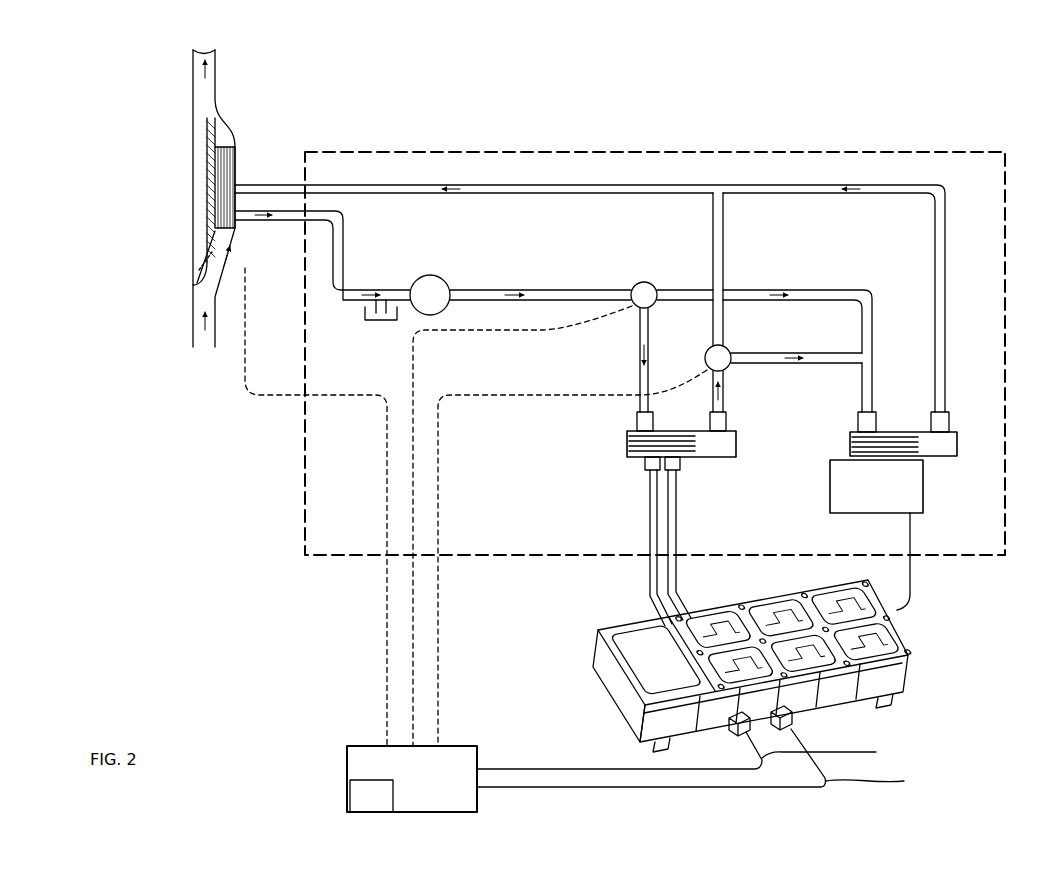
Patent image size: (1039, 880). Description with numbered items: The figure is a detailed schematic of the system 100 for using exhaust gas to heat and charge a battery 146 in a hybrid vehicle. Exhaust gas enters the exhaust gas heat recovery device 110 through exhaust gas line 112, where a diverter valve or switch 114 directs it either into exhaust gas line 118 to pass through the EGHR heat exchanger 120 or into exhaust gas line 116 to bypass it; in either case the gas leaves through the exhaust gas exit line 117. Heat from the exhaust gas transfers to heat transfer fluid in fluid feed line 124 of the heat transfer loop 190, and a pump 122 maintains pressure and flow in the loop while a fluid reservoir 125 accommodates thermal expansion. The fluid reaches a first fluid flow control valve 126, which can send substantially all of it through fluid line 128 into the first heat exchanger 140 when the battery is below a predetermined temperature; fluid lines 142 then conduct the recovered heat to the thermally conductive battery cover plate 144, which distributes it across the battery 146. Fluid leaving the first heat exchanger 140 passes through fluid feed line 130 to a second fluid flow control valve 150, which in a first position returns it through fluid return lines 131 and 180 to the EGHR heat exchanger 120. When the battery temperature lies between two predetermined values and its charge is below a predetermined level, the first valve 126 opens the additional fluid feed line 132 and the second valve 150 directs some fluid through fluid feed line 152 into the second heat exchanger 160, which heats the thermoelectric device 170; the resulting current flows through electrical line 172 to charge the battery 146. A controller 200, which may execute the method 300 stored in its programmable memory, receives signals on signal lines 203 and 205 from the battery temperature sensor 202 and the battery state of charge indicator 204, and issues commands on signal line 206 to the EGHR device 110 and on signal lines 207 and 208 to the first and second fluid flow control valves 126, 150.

The system 100 is at (720, 76).
The exhaust gas heat recovery device 110 is at (207, 214).
The exhaust gas line 112 is at (193, 344).
The diverter valve or switch 114 is at (205, 271).
The exhaust gas line 116 is at (193, 240).
The exhaust gas exit line 117 is at (193, 82).
The exhaust gas line 118 is at (232, 250).
The EGHR heat exchanger 120 is at (237, 162).
The pump 122 is at (436, 276).
The fluid feed line 124 is at (294, 222).
The fluid reservoir 125 is at (369, 320).
The first fluid flow control valve 126 is at (638, 283).
The fluid line 128 is at (640, 372).
The fluid feed line 130 is at (724, 398).
The fluid return line 131 is at (724, 233).
The fluid feed line 132 is at (781, 290).
The first heat exchanger 140 is at (610, 458).
The fluid lines 142 is at (676, 514).
The battery cover plate 144 is at (620, 673).
The battery 146 is at (758, 671).
The second fluid flow control valve 150 is at (709, 346).
The fluid feed line 152 is at (781, 353).
The second heat exchanger 160 is at (890, 432).
The thermoelectric device 170 is at (932, 472).
The electrical line 172 is at (914, 596).
The fluid return line 180 is at (262, 185).
The heat transfer loop 190 is at (298, 499).
The controller 200 is at (412, 779).
The battery temperature sensor 202 is at (744, 736).
The signal line 203 is at (692, 750).
The battery state of charge indicator 204 is at (794, 722).
The signal line 205 is at (707, 758).
The signal line 206 is at (387, 612).
The signal line 207 is at (413, 652).
The signal line 208 is at (438, 695).
The method 300 is at (371, 796).